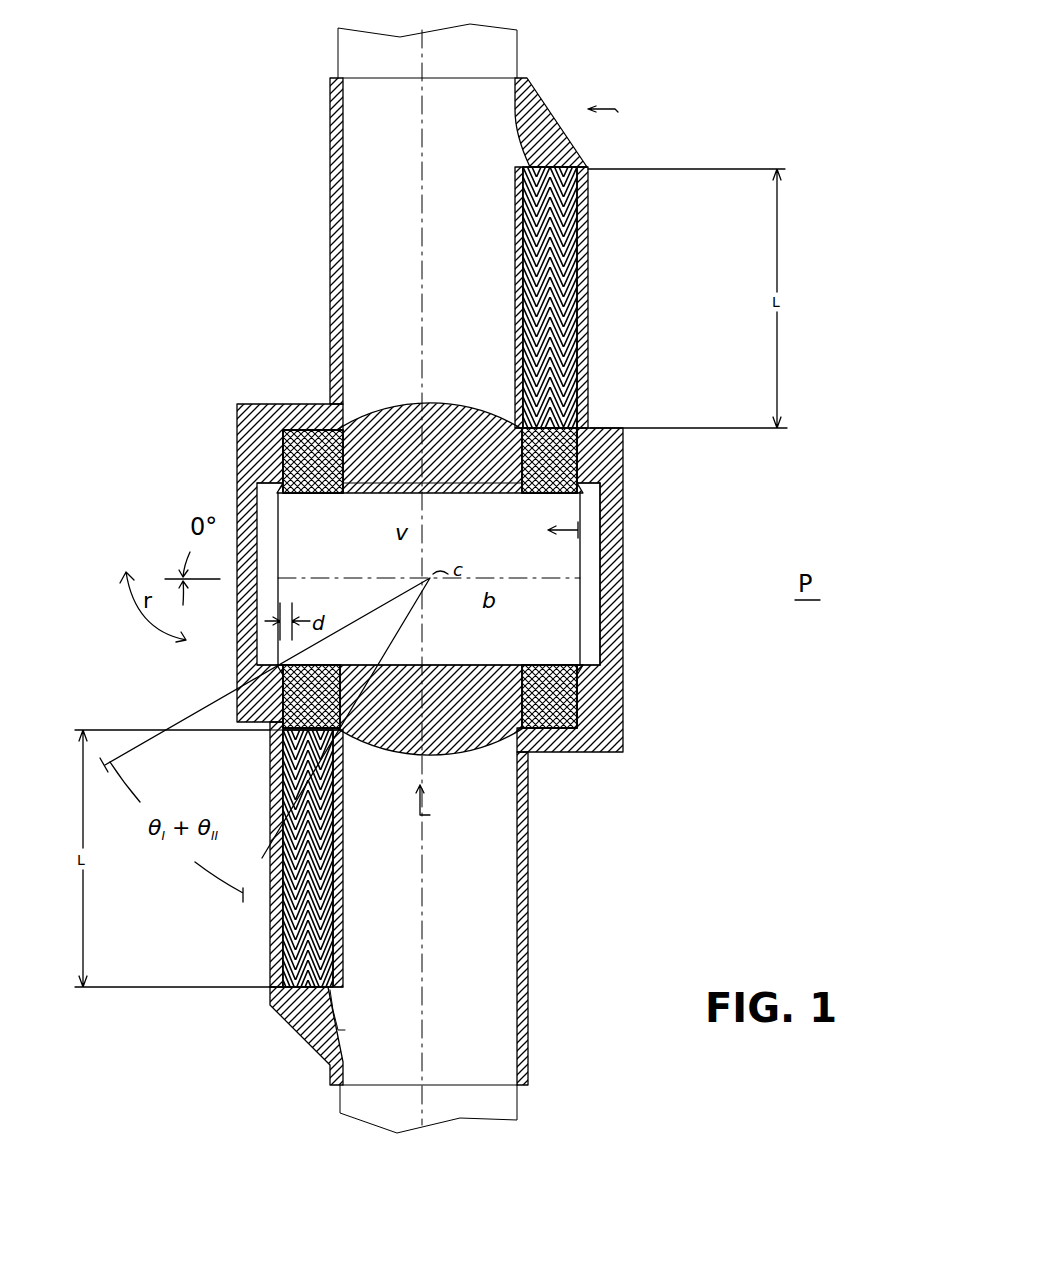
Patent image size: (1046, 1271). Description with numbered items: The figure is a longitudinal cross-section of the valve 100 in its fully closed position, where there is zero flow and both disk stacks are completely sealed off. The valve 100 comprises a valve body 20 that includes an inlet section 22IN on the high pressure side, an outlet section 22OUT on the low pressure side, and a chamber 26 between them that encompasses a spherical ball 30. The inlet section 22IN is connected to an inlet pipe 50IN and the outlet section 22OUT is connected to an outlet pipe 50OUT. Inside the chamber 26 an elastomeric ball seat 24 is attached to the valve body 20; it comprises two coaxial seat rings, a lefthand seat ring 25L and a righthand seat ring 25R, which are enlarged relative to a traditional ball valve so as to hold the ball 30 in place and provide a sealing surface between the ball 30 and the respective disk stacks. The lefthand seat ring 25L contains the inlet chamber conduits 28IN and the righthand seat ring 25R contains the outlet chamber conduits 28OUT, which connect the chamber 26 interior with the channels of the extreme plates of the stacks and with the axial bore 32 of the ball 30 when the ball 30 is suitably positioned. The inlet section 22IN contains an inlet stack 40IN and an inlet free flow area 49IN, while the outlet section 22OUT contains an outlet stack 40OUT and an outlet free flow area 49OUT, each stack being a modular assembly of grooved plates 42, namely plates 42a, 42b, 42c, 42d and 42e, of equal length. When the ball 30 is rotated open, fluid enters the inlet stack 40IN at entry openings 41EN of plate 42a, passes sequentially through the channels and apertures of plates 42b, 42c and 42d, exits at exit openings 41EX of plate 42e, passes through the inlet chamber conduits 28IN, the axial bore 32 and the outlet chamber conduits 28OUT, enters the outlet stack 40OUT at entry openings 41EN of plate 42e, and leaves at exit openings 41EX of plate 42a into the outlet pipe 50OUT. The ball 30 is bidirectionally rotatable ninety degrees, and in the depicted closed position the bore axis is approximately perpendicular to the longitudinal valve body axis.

The valve 100 is at (162, 428).
The valve body 20 is at (623, 583).
The inlet section 22IN is at (528, 843).
The outlet section 22OUT is at (330, 240).
The ball seat 24 is at (302, 408).
The lefthand seat ring 25L is at (292, 668).
The righthand seat ring 25R is at (487, 520).
The chamber 26 is at (623, 635).
The inlet chamber conduits 28IN is at (237, 686).
The outlet chamber conduits 28OUT is at (623, 458).
The ball 30 is at (440, 407).
The axial bore 32 is at (623, 545).
The inlet stack 40IN is at (338, 930).
The outlet stack 40OUT is at (515, 270).
The entry openings 41EN is at (588, 410).
The exit openings 41EX is at (528, 165).
The plate 42 is at (577, 372).
The plate 42a is at (583, 167).
The plate 42b is at (569, 167).
The plate 42c is at (557, 167).
The plate 42d is at (545, 167).
The plate 42e is at (533, 167).
The inlet free flow area 49IN is at (480, 915).
The outlet free flow area 49OUT is at (360, 286).
The inlet pipe 50IN is at (500, 1110).
The outlet pipe 50OUT is at (500, 47).